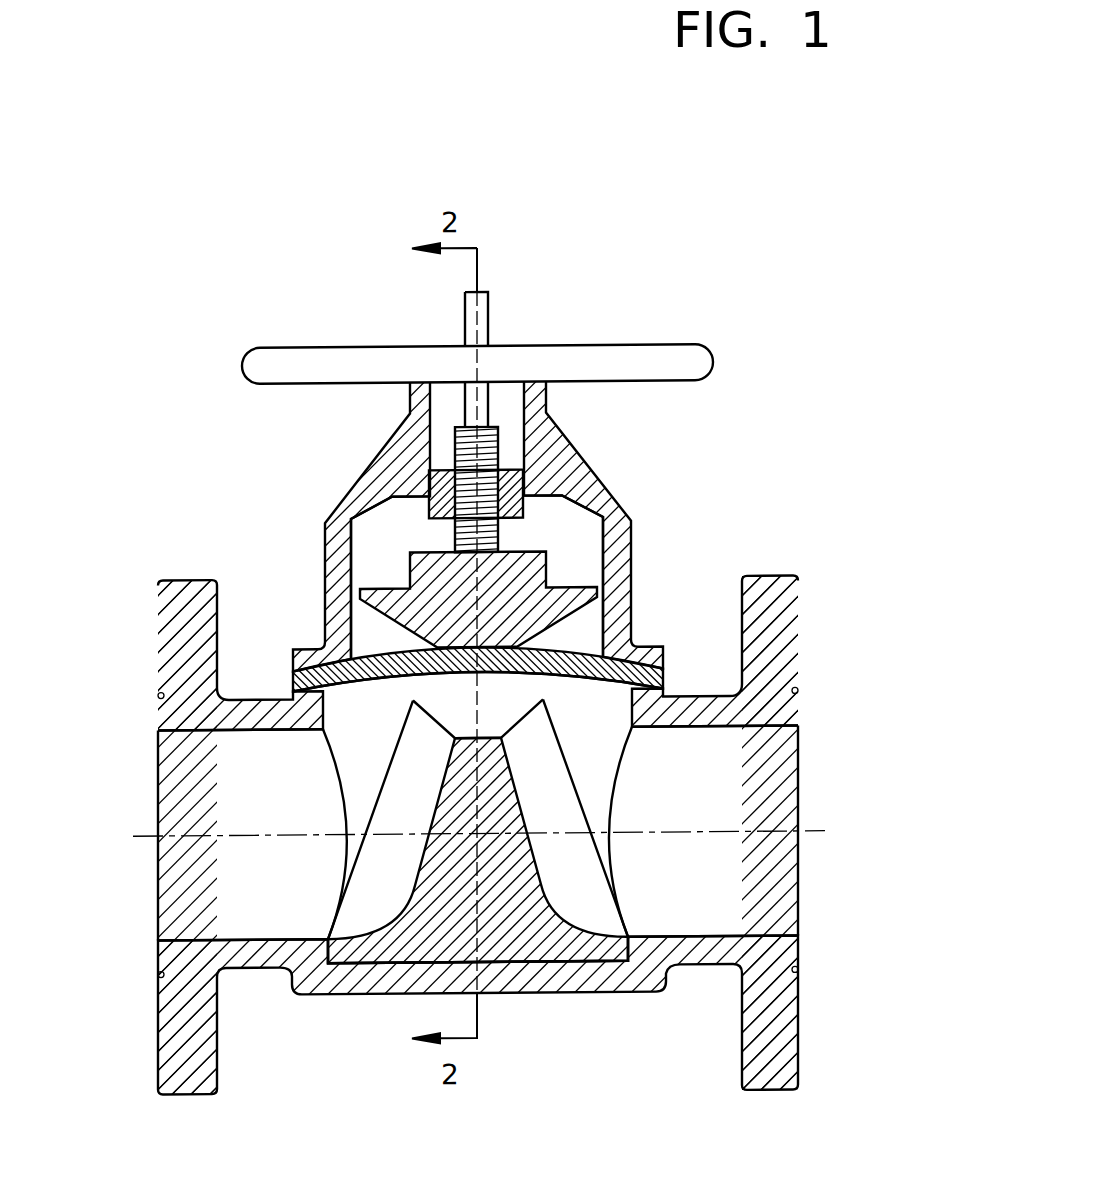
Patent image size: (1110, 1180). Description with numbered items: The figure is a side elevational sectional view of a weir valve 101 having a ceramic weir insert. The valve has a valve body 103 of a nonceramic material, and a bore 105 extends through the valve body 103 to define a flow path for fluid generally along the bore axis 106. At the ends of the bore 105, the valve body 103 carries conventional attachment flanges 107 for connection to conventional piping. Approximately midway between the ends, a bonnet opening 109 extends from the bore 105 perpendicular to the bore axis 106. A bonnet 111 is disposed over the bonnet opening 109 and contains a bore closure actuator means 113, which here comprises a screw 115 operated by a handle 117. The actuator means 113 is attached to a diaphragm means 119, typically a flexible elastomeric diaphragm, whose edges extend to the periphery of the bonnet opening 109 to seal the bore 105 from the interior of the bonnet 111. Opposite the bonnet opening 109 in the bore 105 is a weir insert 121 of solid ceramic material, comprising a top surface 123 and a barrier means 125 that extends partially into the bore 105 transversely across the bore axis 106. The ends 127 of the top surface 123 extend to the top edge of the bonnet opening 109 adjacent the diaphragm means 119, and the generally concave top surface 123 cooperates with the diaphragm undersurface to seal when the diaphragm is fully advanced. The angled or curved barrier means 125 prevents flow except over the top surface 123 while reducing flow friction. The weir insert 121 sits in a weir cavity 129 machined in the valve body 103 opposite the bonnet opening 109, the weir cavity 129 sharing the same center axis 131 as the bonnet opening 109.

The weir valve 101 is at (737, 432).
The valve body 103 is at (330, 983).
The bore 105 is at (208, 783).
The bore axis 106 is at (155, 838).
The attachment flanges 107 is at (760, 608).
The bonnet opening 109 is at (525, 683).
The bonnet 111 is at (578, 562).
The bore closure actuator means 113 is at (541, 552).
The screw 115 is at (460, 467).
The handle 117 is at (593, 360).
The diaphragm means 119 is at (598, 655).
The weir insert 121 is at (522, 928).
The top surface 123 is at (458, 712).
The barrier means 125 is at (457, 855).
The ends of the top surface 127 is at (440, 697).
The weir cavity 129 is at (613, 885).
The center axis 131 is at (480, 1022).